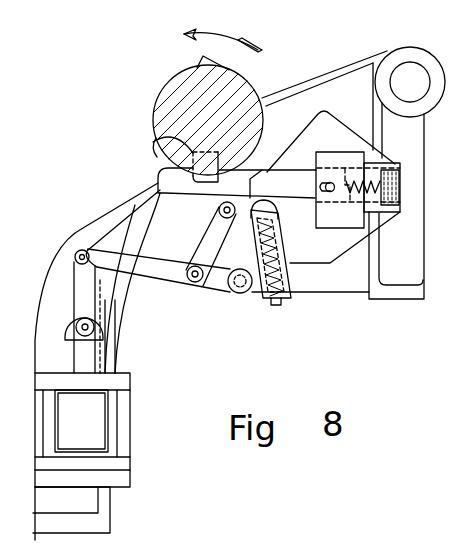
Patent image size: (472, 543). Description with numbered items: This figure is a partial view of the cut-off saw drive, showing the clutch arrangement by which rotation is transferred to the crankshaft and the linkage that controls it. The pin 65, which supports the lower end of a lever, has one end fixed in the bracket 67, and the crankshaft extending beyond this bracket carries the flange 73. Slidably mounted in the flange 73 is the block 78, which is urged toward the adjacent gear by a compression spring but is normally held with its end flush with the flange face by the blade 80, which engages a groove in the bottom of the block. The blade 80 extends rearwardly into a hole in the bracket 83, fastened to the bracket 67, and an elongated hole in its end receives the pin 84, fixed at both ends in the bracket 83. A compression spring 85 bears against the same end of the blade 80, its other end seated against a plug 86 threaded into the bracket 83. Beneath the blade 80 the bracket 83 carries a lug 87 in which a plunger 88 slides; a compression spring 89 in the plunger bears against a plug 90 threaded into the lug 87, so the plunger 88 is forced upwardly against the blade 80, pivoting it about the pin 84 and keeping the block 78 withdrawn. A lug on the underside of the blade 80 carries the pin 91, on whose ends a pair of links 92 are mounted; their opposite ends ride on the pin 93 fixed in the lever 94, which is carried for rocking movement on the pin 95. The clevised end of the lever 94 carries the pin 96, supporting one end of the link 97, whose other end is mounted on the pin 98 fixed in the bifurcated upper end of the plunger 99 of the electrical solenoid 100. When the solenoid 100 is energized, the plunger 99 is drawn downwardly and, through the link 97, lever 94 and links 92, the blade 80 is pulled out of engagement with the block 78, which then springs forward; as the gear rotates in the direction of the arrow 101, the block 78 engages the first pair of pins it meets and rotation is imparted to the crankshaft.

The pin 65 is at (409, 72).
The bracket 67 is at (107, 215).
The flange 73 is at (164, 96).
The block 78 is at (157, 143).
The blade 80 is at (160, 168).
The bracket 83 is at (323, 132).
The pin 84 is at (326, 186).
The compression spring 85 is at (378, 167).
The plug 86 is at (400, 190).
The lug 87 is at (291, 281).
The plunger 88 is at (277, 205).
The compression spring 89 is at (281, 243).
The plug 90 is at (274, 297).
The pin 91 is at (219, 210).
The links 92 is at (202, 241).
The pin 93 is at (203, 284).
The lever 94 is at (147, 272).
The pin 95 is at (230, 285).
The pin 96 is at (82, 249).
The link 97 is at (74, 278).
The pin 98 is at (97, 327).
The plunger 99 is at (83, 355).
The electrical solenoid 100 is at (92, 417).
The arrow 101 is at (232, 18).